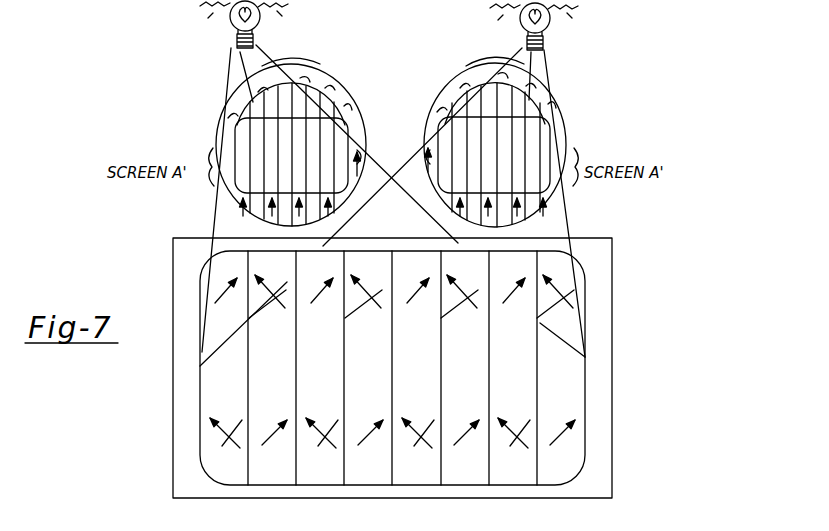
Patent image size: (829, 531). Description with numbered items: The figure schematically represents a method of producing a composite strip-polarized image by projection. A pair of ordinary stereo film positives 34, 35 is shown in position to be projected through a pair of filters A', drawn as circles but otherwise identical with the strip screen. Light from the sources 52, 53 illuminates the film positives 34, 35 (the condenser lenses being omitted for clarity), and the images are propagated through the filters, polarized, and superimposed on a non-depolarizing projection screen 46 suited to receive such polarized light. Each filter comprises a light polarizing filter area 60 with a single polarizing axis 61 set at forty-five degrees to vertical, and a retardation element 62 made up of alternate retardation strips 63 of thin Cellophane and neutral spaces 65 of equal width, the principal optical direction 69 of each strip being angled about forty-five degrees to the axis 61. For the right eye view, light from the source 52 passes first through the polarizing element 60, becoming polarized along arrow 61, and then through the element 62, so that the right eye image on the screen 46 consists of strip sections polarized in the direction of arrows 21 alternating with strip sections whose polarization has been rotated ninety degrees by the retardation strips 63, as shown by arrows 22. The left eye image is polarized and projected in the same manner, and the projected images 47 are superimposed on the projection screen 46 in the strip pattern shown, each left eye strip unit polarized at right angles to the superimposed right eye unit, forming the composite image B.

The arrows indicating polarization direction 21 is at (223, 297).
The arrows indicating rotated polarization direction 22 is at (274, 297).
The stereo film positive 34 is at (350, 124).
The stereo film positive 35 is at (555, 125).
The non-depolarizing projection screen 46 is at (613, 307).
The projected images 47 is at (587, 425).
The light source 52 is at (552, 26).
The light source 53 is at (233, 24).
The light polarizing filter area 60 is at (316, 64).
The polarizing axis 61 is at (262, 66).
The retardation element 62 is at (352, 112).
The retardation strip areas 63 is at (327, 100).
The neutral spaces 65 is at (318, 95).
The principal optical direction arrow 69 is at (244, 220).